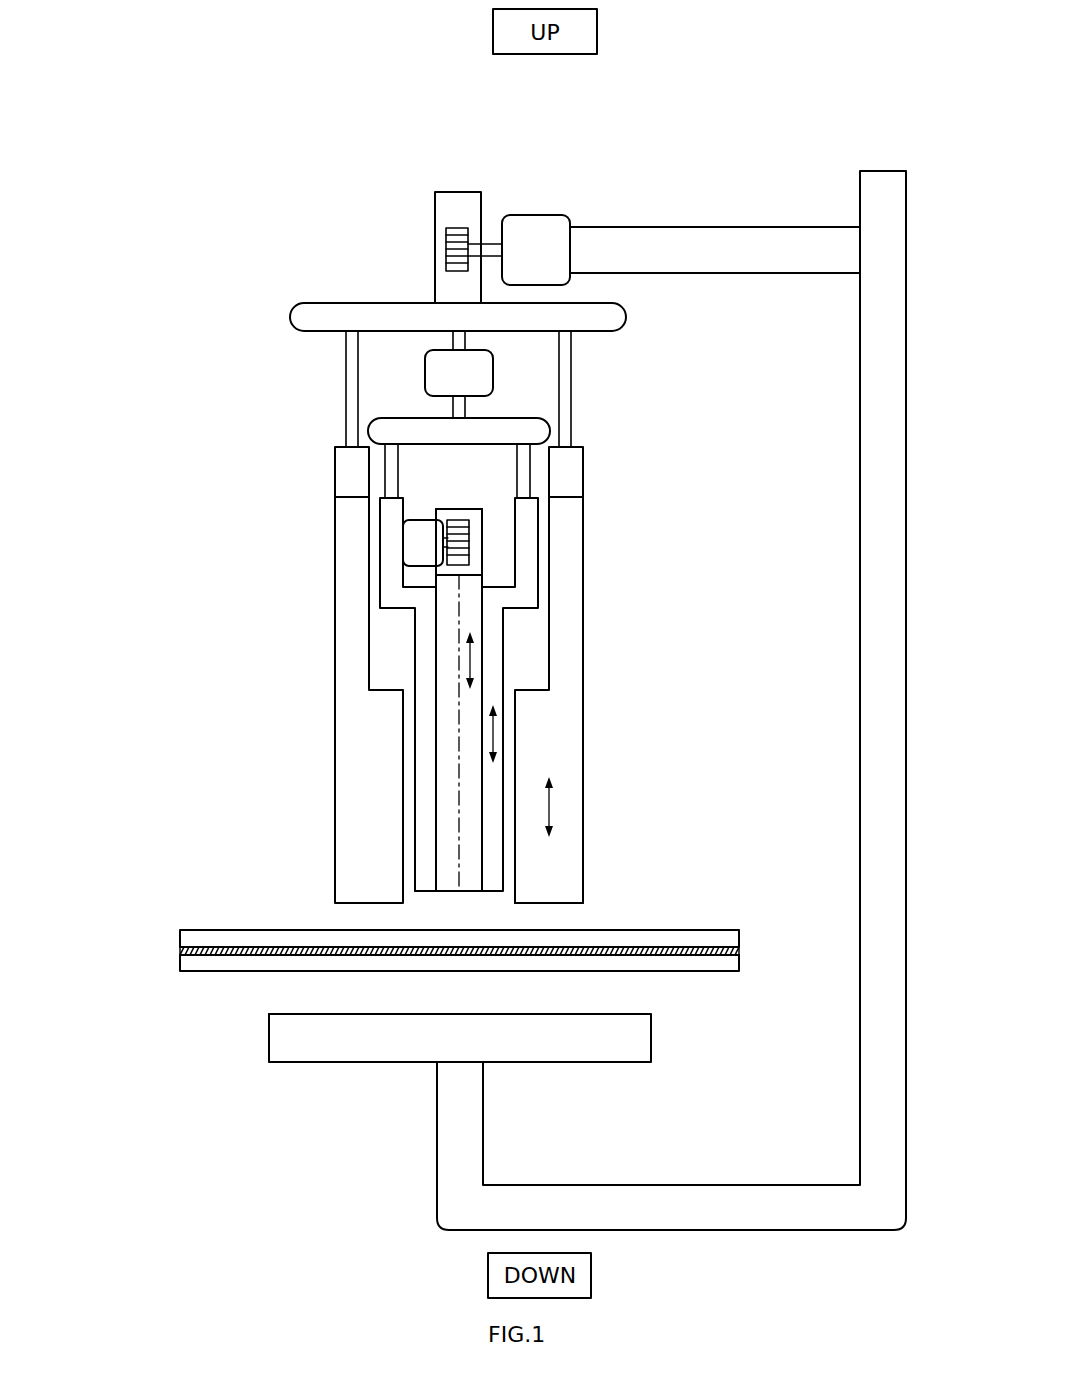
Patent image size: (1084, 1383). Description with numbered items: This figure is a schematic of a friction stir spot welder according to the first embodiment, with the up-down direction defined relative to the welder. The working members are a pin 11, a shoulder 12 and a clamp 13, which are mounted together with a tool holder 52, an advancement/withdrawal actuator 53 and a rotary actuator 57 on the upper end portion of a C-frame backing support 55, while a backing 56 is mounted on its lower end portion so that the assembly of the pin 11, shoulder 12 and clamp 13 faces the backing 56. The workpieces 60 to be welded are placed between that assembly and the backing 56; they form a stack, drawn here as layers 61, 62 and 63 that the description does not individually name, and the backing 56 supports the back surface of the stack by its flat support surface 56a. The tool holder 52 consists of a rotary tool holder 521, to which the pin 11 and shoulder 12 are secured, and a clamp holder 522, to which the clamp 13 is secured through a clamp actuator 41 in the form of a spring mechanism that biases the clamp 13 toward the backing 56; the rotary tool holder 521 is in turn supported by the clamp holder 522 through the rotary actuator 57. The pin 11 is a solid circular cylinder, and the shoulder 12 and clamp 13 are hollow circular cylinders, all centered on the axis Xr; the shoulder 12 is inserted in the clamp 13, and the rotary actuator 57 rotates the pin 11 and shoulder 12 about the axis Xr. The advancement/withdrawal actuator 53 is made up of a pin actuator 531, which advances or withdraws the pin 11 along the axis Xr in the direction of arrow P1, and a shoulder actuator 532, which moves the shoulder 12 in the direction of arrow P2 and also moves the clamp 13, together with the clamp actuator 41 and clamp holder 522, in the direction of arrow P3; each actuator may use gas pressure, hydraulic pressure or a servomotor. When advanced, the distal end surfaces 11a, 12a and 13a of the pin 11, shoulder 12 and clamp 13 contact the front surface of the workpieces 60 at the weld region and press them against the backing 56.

The pin 11 is at (447, 747).
The distal end surface of the pin 11a is at (477, 891).
The shoulder 12 is at (425, 702).
The distal end surface of the shoulder 12a is at (428, 891).
The clamp 13 is at (345, 544).
The distal end surface of the clamp 13a is at (550, 903).
The clamp actuator 41 is at (335, 478).
The tool holder 52 is at (386, 400).
The rotary tool holder 521 is at (347, 434).
The clamp holder 522 is at (300, 318).
The advancement/withdrawal actuator 53 is at (602, 321).
The pin actuator 531 is at (425, 528).
The shoulder actuator 532 is at (535, 227).
The backing support 55 is at (860, 549).
The backing 56 is at (640, 1036).
The support surface 56a is at (292, 1008).
The rotary actuator 57 is at (457, 372).
The workpieces 60 is at (466, 893).
The upper layer 61 is at (190, 938).
The lower layer 62 is at (727, 963).
The intermediate layer 63 is at (698, 947).
The axis Xr is at (458, 822).
The arrow P1 is at (472, 660).
The arrow P2 is at (493, 736).
The arrow P3 is at (550, 806).